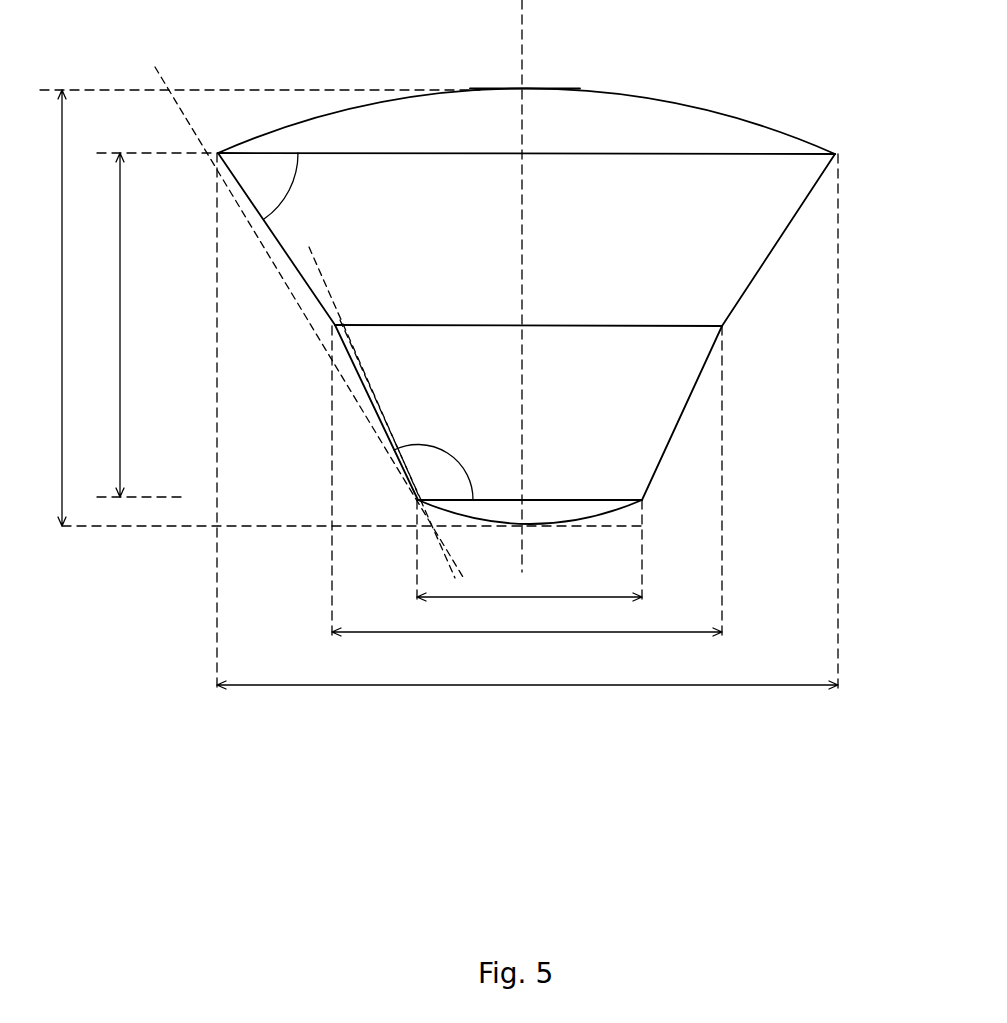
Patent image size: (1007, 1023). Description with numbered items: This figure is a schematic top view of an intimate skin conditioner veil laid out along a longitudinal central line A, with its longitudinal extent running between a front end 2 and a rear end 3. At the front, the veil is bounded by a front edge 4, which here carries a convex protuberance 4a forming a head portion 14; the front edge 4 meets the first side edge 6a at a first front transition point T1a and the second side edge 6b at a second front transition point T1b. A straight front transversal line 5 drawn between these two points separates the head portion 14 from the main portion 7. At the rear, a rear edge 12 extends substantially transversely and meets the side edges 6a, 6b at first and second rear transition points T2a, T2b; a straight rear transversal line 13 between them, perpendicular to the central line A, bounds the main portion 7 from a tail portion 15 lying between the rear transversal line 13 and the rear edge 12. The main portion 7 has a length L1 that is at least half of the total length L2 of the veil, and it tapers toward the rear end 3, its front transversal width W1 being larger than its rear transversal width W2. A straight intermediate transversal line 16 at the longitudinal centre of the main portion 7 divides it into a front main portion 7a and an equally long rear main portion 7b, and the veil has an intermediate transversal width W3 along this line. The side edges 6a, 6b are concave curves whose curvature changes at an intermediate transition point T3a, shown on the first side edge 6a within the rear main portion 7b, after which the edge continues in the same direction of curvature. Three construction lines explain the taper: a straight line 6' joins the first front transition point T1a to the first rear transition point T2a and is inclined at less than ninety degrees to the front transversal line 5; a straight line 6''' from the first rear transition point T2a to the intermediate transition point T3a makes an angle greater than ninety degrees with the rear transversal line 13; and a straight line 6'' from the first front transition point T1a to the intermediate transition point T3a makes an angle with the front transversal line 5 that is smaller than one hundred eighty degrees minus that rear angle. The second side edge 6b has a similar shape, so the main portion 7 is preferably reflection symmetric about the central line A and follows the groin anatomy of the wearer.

The front end 2 is at (549, 309).
The rear end 3 is at (548, 527).
The front edge 4 is at (268, 132).
The protuberance 4a is at (480, 123).
The front transversal line 5 is at (697, 153).
The straight line 6' is at (309, 322).
The straight line 6'' is at (382, 411).
The straight line 6''' is at (411, 410).
The first side edge 6a is at (274, 239).
The second side edge 6b is at (741, 299).
The main portion 7 is at (542, 326).
The front main portion 7a is at (542, 239).
The rear main portion 7b is at (613, 407).
The rear edge 12 is at (588, 523).
The rear transversal line 13 is at (572, 498).
The head portion 14 is at (856, 95).
The tail portion 15 is at (684, 551).
The intermediate transversal line 16 is at (668, 326).
The longitudinal central line A is at (540, 286).
The first front transition point T1a is at (218, 153).
The second front transition point T1b is at (835, 154).
The first rear transition point T2a is at (418, 500).
The second rear transition point T2b is at (642, 500).
The intermediate transition point T3a is at (360, 375).
The length of main portion L1 is at (105, 325).
The total longitudinal length L2 is at (49, 308).
The front transversal width W1 is at (527, 705).
The rear transversal width W2 is at (529, 613).
The intermediate transversal width W3 is at (527, 652).